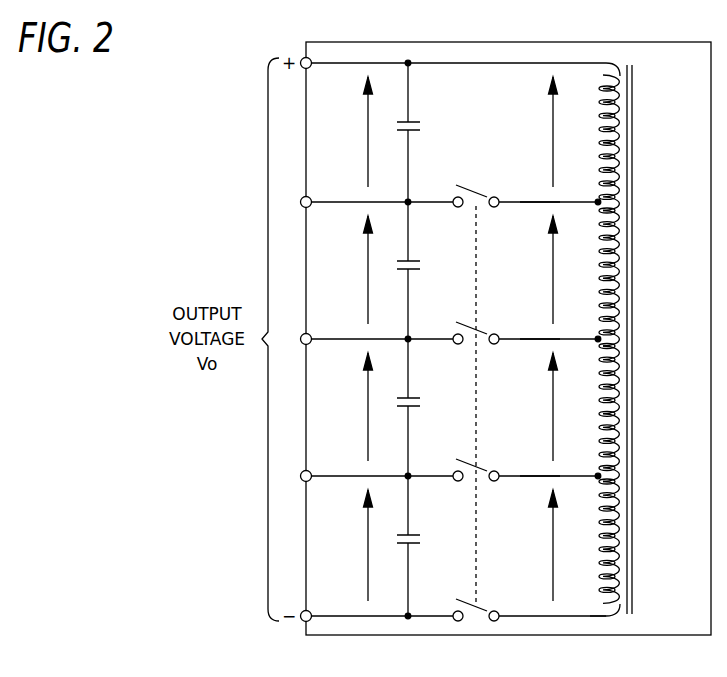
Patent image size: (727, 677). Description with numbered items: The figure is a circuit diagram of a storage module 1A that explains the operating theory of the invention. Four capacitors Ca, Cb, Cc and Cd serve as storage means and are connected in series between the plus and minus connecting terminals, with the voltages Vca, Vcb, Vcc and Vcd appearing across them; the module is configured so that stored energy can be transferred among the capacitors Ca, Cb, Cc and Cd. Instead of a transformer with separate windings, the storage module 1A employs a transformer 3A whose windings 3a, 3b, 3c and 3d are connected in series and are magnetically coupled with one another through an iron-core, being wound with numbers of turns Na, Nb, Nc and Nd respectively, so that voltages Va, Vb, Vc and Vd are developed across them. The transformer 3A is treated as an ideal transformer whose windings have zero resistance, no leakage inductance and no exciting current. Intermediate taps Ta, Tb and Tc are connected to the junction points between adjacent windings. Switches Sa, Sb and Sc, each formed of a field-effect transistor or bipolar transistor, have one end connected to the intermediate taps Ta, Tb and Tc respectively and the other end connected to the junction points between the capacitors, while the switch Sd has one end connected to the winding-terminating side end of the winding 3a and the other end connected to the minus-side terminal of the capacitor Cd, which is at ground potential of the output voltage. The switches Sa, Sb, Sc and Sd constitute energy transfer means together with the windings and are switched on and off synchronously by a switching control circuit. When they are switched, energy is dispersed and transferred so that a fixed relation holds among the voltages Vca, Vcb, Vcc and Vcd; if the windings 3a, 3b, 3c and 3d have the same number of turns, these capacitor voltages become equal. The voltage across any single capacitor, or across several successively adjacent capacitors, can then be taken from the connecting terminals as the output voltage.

The storage module 1A is at (496, 42).
The transformer 3A is at (634, 125).
The winding 3a is at (600, 160).
The winding 3b is at (600, 297).
The winding 3c is at (600, 434).
The winding 3d is at (600, 574).
The number of turns Na is at (590, 143).
The number of turns Nb is at (590, 278).
The number of turns Nc is at (590, 413).
The number of turns Nd is at (590, 543).
The intermediate tap Ta is at (600, 206).
The intermediate tap Tb is at (600, 343).
The intermediate tap Tc is at (600, 480).
The capacitor Ca is at (411, 122).
The capacitor Cb is at (411, 261).
The capacitor Cc is at (411, 398).
The capacitor Cd is at (411, 535).
The switch Sa is at (478, 193).
The switch Sb is at (478, 330).
The switch Sc is at (478, 467).
The switch Sd is at (478, 607).
The winding voltage Va is at (541, 119).
The winding voltage Vb is at (541, 258).
The winding voltage Vc is at (541, 395).
The winding voltage Vd is at (541, 532).
The capacitor voltage Vca is at (362, 136).
The capacitor voltage Vcb is at (362, 275).
The capacitor voltage Vcc is at (362, 412).
The capacitor voltage Vcd is at (362, 549).